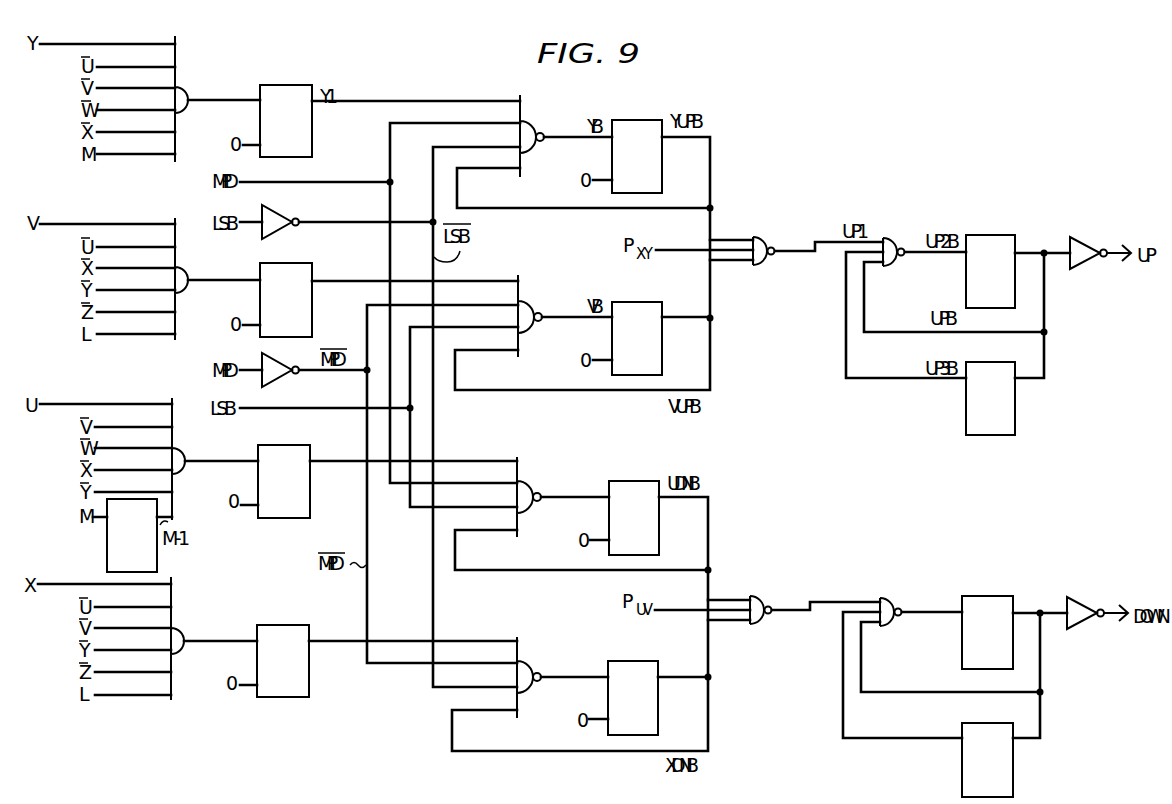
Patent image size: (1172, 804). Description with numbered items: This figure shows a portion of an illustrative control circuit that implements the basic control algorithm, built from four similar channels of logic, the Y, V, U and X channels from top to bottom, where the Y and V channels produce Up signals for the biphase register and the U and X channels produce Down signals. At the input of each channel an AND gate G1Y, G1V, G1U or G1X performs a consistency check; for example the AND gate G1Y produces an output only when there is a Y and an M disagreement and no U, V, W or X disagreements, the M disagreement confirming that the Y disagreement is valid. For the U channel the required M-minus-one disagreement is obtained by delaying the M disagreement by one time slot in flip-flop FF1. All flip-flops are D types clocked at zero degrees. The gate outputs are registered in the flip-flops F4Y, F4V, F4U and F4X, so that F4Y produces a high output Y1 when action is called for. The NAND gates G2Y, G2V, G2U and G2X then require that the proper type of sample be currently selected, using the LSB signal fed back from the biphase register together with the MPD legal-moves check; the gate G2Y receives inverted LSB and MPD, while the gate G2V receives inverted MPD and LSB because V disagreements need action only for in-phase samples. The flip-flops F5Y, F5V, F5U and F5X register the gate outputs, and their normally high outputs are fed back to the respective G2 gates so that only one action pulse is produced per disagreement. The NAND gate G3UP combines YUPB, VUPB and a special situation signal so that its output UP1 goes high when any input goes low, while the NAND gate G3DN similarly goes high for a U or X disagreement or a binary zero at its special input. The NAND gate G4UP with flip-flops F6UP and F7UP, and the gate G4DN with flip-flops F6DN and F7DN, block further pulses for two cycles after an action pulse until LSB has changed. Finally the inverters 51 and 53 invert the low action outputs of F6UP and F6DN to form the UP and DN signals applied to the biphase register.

The inverter 51 is at (1080, 238).
The inverter 53 is at (1076, 598).
The AND gate G1Y is at (184, 87).
The AND gate G1V is at (184, 267).
The AND gate G1U is at (181, 448).
The AND gate G1X is at (180, 628).
The NAND gate G2Y is at (530, 121).
The NAND gate G2V is at (528, 301).
The NAND gate G2U is at (527, 481).
The NAND gate G2X is at (527, 661).
The NAND gate G3UP is at (765, 237).
The NAND gate G4UP is at (894, 238).
The NAND gate G3DN is at (762, 596).
The NAND gate G4DN is at (889, 598).
The flip-flop F4Y is at (288, 121).
The flip-flop F4V is at (288, 300).
The flip-flop F4U is at (286, 481).
The flip-flop F4X is at (285, 661).
The flip-flop FF1 is at (133, 535).
The flip-flop F5Y is at (638, 156).
The flip-flop F5V is at (638, 338).
The flip-flop F5U is at (635, 518).
The flip-flop F5X is at (634, 698).
The flip-flop F6UP is at (992, 271).
The flip-flop F7UP is at (992, 398).
The flip-flop F6DN is at (988, 632).
The flip-flop F7DN is at (988, 760).